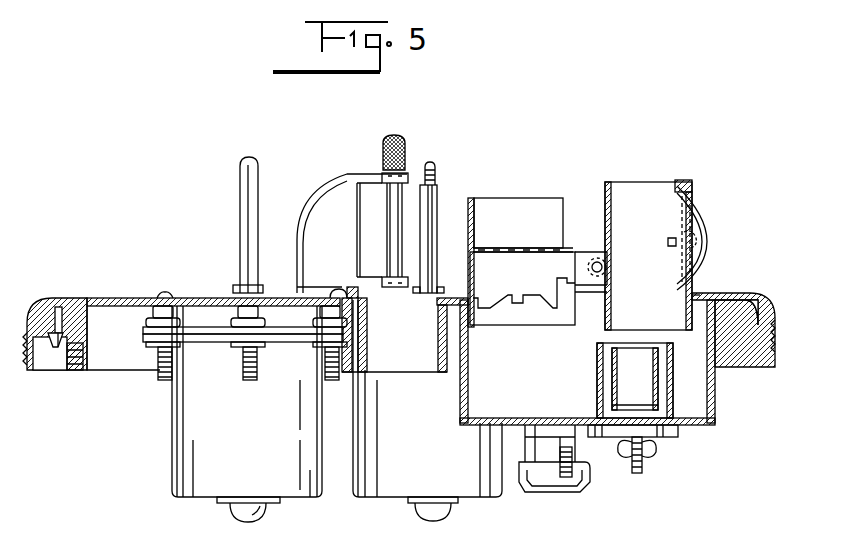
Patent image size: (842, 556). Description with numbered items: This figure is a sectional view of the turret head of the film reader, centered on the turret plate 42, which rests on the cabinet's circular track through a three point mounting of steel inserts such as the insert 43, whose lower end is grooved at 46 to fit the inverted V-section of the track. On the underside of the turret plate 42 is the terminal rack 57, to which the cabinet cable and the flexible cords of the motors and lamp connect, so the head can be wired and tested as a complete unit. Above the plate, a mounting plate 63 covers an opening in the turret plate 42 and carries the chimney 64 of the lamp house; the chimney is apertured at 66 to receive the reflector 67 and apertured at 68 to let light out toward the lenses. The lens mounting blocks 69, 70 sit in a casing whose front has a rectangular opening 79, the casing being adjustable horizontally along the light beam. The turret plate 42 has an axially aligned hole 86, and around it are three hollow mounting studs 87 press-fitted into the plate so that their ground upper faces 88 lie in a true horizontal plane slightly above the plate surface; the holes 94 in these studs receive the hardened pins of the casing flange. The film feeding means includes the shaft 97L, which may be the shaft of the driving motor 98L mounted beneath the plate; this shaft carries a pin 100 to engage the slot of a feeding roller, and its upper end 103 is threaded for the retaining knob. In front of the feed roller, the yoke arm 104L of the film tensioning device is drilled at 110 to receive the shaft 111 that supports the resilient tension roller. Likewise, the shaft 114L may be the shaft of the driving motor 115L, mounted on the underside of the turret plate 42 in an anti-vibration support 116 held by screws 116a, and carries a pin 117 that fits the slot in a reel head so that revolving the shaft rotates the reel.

The turret plate 42 is at (70, 298).
The steel insert 43 is at (42, 312).
The grooved lower end 46 is at (60, 348).
The terminal rack 57 is at (553, 490).
The mounting plate 63 is at (594, 292).
The chimney 64 is at (692, 183).
The reflector aperture 66 is at (700, 198).
The reflector 67 is at (708, 250).
The light aperture 68 is at (605, 210).
The lens mounting block 69 is at (497, 252).
The lens mounting block 70 is at (505, 292).
The rectangular opening 79 is at (469, 236).
The axially aligned hole 86 is at (385, 372).
The hollow mounting stud 87 is at (332, 297).
The upper face of stud 88 is at (352, 290).
The stud hole 94 is at (356, 322).
The left feed shaft 97L is at (437, 200).
The left driving motor 98L is at (440, 462).
The pin 100 is at (417, 288).
The upper end of shaft 103 is at (434, 166).
The left yoke arm 104L is at (343, 178).
The drilled hole 110 is at (386, 186).
The roller shaft 111 is at (396, 216).
The left reel shaft 114L is at (240, 200).
The left reel driving motor 115L is at (254, 462).
The anti-vibration support 116 is at (150, 320).
The screw 116a is at (168, 296).
The pin 117 is at (232, 286).